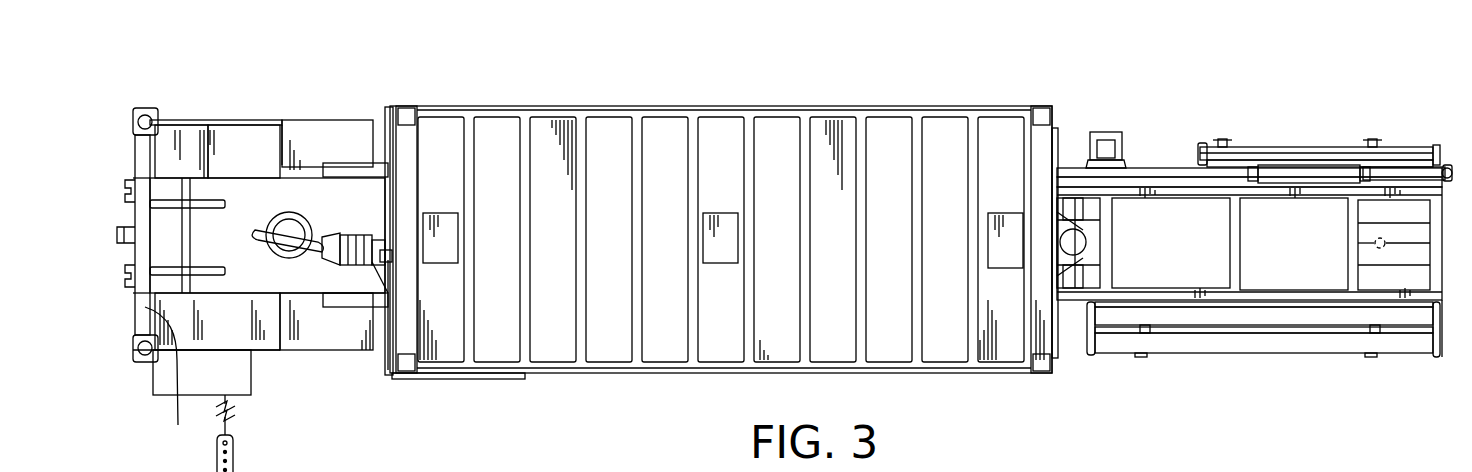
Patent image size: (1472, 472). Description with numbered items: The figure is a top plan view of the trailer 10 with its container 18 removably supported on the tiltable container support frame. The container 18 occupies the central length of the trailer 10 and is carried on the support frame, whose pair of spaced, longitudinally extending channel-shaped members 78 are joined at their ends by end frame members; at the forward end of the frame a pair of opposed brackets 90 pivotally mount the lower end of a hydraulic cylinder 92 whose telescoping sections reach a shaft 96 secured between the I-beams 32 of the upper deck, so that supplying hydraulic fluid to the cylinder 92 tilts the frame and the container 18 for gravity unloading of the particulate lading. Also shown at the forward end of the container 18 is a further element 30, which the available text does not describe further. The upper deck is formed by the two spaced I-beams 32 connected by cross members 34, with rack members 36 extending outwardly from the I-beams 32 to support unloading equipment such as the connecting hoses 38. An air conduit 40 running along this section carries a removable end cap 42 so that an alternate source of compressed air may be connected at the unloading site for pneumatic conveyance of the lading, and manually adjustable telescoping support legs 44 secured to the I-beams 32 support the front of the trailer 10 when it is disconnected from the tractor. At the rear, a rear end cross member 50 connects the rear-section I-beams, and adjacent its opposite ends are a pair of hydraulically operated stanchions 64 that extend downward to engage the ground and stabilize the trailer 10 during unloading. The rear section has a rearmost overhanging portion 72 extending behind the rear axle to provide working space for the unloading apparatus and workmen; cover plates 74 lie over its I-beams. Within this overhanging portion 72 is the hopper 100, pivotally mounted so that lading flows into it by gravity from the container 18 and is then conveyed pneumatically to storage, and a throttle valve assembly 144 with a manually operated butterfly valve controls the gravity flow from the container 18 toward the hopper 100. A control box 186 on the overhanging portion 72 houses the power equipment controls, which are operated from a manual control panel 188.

The trailer 10 is at (540, 383).
The container 18 is at (795, 104).
The door 30 is at (1057, 192).
The I-beams 32 is at (1310, 193).
The cross members 34 is at (1348, 240).
The rack members 36 is at (1223, 138).
The connecting hoses 38 is at (1260, 153).
The air conduit 40 is at (1135, 172).
The removable end cap 42 is at (1450, 165).
The telescoping support legs 44 is at (1108, 150).
The rear end cross member 50 is at (167, 379).
The stanchions 64 is at (145, 115).
The overhanging portion 72 is at (258, 113).
The cover plates 74 is at (190, 143).
The channel-shaped members 78 is at (341, 170).
The brackets 90 is at (1064, 205).
The hydraulic cylinder 92 is at (1082, 242).
The shaft 96 is at (1076, 280).
The hopper 100 is at (264, 258).
The throttle valve assembly 144 is at (372, 238).
The control box 186 is at (255, 362).
The manual control panel 188 is at (236, 455).